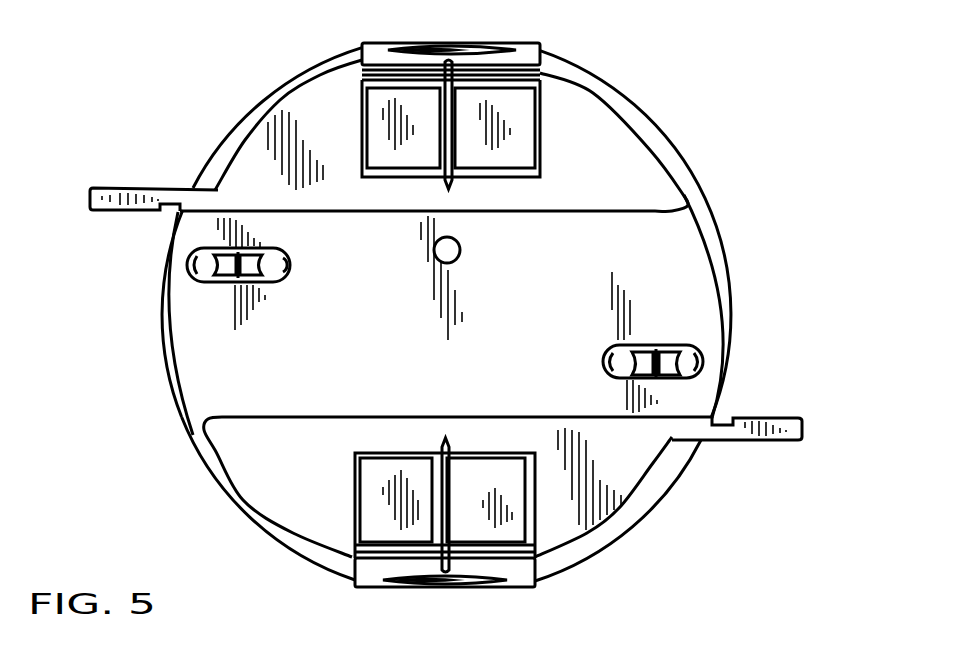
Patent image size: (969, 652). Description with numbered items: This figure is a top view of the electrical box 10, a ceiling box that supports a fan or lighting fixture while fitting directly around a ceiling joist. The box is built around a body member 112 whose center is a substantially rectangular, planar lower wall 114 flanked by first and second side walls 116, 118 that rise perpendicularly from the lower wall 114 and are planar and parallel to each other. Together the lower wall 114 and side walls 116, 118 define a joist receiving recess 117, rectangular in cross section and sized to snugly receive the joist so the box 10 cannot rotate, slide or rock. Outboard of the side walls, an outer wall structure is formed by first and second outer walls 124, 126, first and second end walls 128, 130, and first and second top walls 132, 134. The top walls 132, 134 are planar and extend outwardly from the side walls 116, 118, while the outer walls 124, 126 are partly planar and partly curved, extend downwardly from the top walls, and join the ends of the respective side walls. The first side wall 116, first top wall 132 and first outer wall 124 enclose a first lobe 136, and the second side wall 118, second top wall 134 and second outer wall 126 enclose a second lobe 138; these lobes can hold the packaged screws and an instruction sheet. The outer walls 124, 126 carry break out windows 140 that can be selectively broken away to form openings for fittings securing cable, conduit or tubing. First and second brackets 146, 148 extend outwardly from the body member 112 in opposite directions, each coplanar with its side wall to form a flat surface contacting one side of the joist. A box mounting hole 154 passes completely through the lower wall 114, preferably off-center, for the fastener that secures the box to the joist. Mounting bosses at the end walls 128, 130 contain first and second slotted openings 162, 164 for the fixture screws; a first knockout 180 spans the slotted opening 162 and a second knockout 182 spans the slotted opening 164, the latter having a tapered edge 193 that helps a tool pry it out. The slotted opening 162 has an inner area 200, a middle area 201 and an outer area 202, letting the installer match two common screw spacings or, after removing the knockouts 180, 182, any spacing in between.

The electrical box 10 is at (182, 98).
The body member 112 is at (650, 118).
The lower wall 114 is at (550, 266).
The first side wall 116 is at (393, 417).
The joist receiving recess 117 is at (665, 272).
The second side wall 118 is at (375, 212).
The first outer wall 124 is at (370, 588).
The second outer wall 126 is at (520, 43).
The first end wall 128 is at (728, 297).
The second end wall 130 is at (163, 352).
The first top wall 132 is at (258, 458).
The second top wall 134 is at (597, 122).
The first lobe 136 is at (580, 512).
The second lobe 138 is at (322, 98).
The break out window 140 is at (428, 46).
The first bracket 146 is at (775, 418).
The second bracket 148 is at (118, 197).
The box mounting hole 154 is at (455, 262).
The first slotted opening 162 is at (275, 273).
The second slotted opening 164 is at (620, 366).
The first knockout 180 is at (230, 282).
The second knockout 182 is at (660, 347).
The tapered edge 193 is at (614, 355).
The inner area 200 is at (275, 277).
The middle area 201 is at (243, 258).
The outer area 202 is at (195, 265).